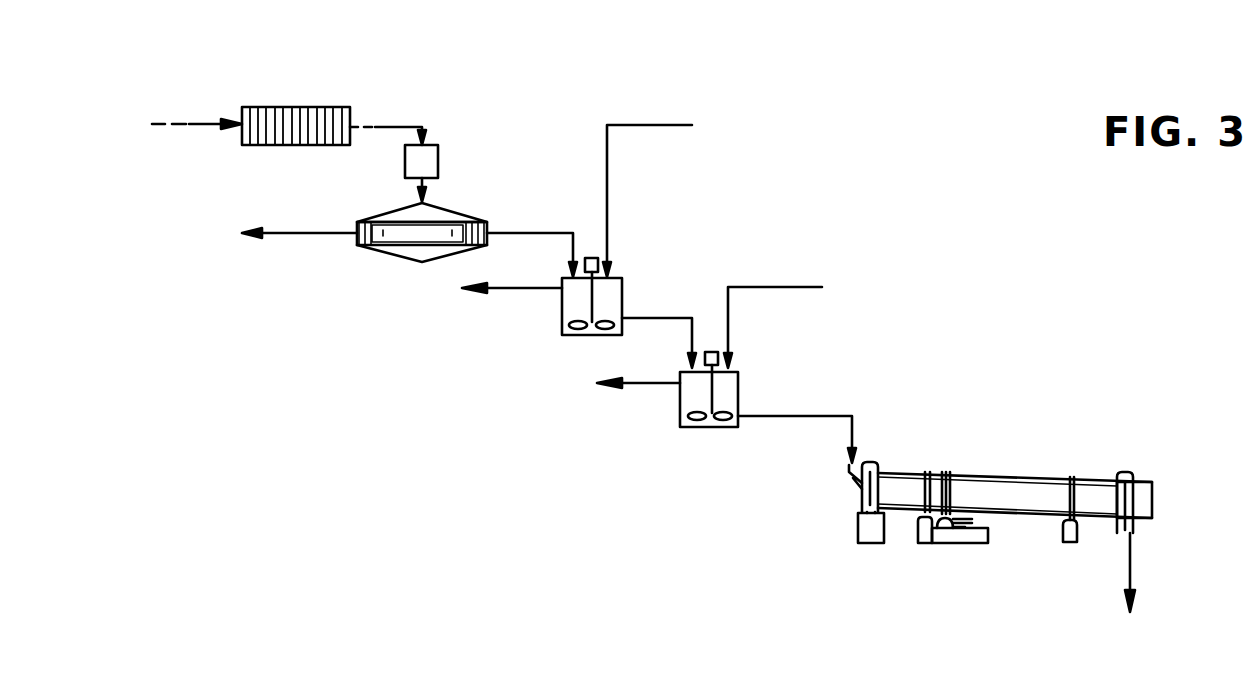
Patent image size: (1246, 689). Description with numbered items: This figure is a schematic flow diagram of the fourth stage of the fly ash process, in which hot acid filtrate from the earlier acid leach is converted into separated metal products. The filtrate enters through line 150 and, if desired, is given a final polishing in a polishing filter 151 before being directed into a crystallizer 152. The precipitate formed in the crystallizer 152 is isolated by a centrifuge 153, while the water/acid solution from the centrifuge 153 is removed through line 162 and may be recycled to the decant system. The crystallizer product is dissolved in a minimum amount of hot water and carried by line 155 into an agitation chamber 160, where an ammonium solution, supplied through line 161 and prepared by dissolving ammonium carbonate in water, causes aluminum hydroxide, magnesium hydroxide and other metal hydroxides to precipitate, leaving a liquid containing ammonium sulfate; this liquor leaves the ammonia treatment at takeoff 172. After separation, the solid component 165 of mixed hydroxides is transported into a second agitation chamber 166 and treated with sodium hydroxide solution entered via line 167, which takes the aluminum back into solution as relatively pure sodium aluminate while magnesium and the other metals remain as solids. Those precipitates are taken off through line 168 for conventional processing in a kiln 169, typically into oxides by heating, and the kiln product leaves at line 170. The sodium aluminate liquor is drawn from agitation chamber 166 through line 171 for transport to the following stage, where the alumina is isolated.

The line 150 is at (187, 125).
The polishing filter 151 is at (297, 106).
The crystallizer 152 is at (438, 150).
The centrifuge 153 is at (410, 262).
The line 155 is at (512, 232).
The agitation chamber 160 is at (593, 337).
The line 161 is at (642, 125).
The line 162 is at (323, 232).
The solid component 165 is at (638, 318).
The agitation chamber 166 is at (715, 428).
The line 167 is at (772, 287).
The line 168 is at (802, 416).
The kiln 169 is at (1027, 478).
The line 170 is at (1133, 565).
The line 171 is at (652, 387).
The takeoff 172 is at (533, 290).